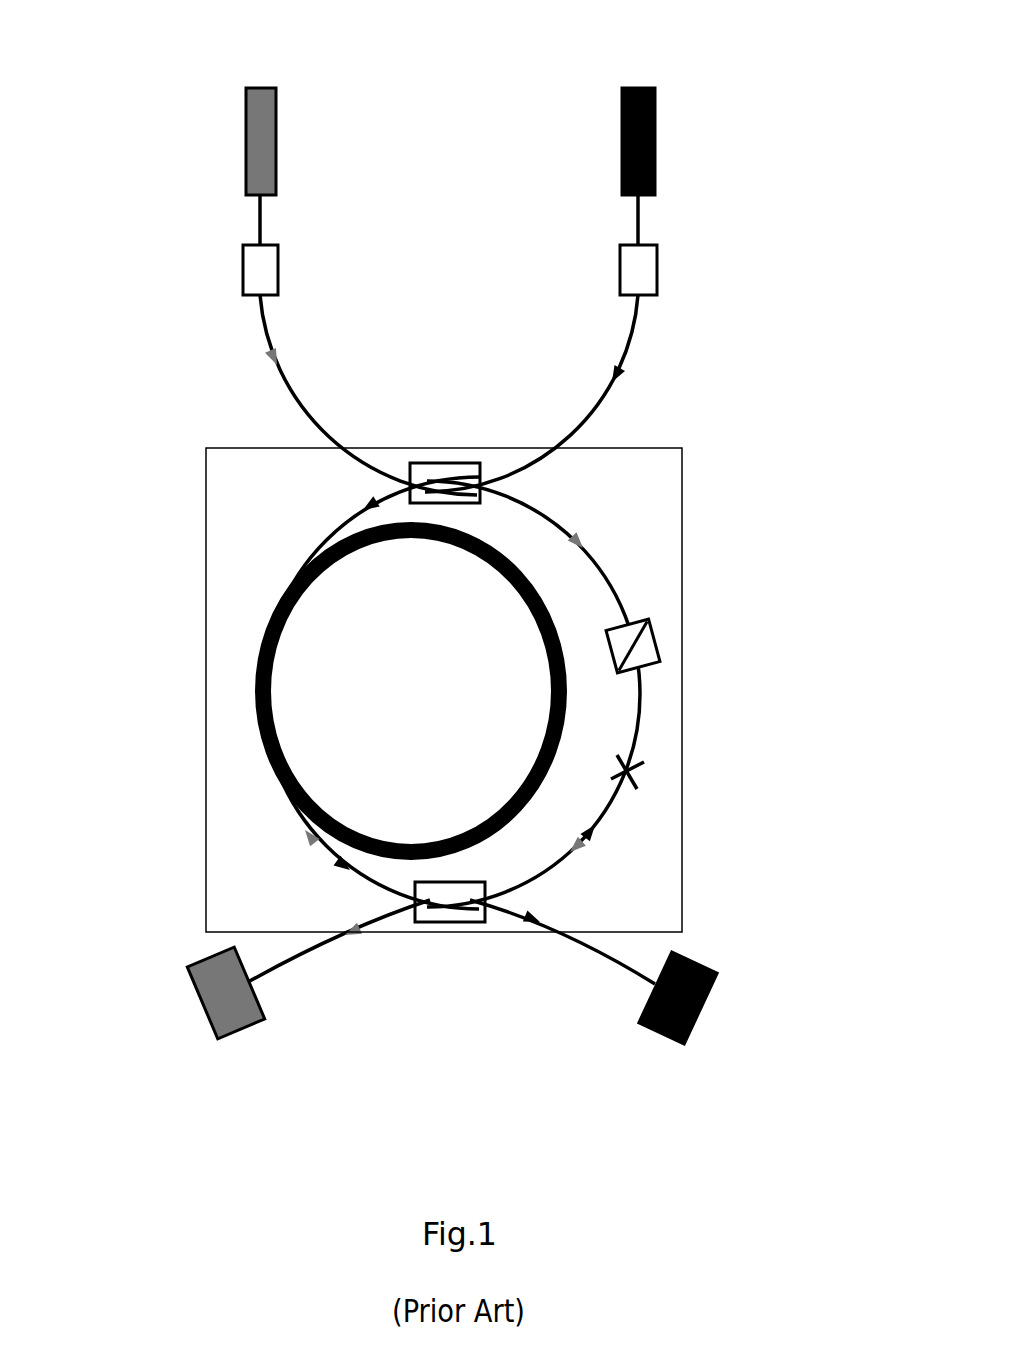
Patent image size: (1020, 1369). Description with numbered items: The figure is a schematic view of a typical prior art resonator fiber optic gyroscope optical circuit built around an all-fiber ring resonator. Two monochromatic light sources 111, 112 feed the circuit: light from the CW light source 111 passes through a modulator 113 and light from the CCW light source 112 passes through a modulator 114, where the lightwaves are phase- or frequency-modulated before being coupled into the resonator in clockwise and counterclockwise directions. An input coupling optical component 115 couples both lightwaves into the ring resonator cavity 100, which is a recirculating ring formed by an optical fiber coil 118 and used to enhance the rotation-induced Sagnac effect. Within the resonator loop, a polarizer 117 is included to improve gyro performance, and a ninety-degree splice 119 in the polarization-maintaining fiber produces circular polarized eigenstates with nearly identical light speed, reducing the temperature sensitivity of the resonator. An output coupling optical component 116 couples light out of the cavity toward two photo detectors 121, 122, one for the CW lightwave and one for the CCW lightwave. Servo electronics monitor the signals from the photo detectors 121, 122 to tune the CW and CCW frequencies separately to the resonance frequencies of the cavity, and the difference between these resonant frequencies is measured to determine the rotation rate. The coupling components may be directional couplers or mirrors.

The ring resonator cavity 100 is at (205, 587).
The monochromatic light source 111 is at (245, 125).
The monochromatic light source 112 is at (655, 117).
The modulator 113 is at (243, 272).
The modulator 114 is at (658, 275).
The input coupling optical component 115 is at (440, 463).
The output coupling optical component 116 is at (440, 922).
The polarizer 117 is at (658, 643).
The optical fiber coil 118 is at (510, 582).
The 90° splice 119 is at (630, 777).
The photo detector 121 is at (195, 1026).
The photo detector 122 is at (732, 1028).